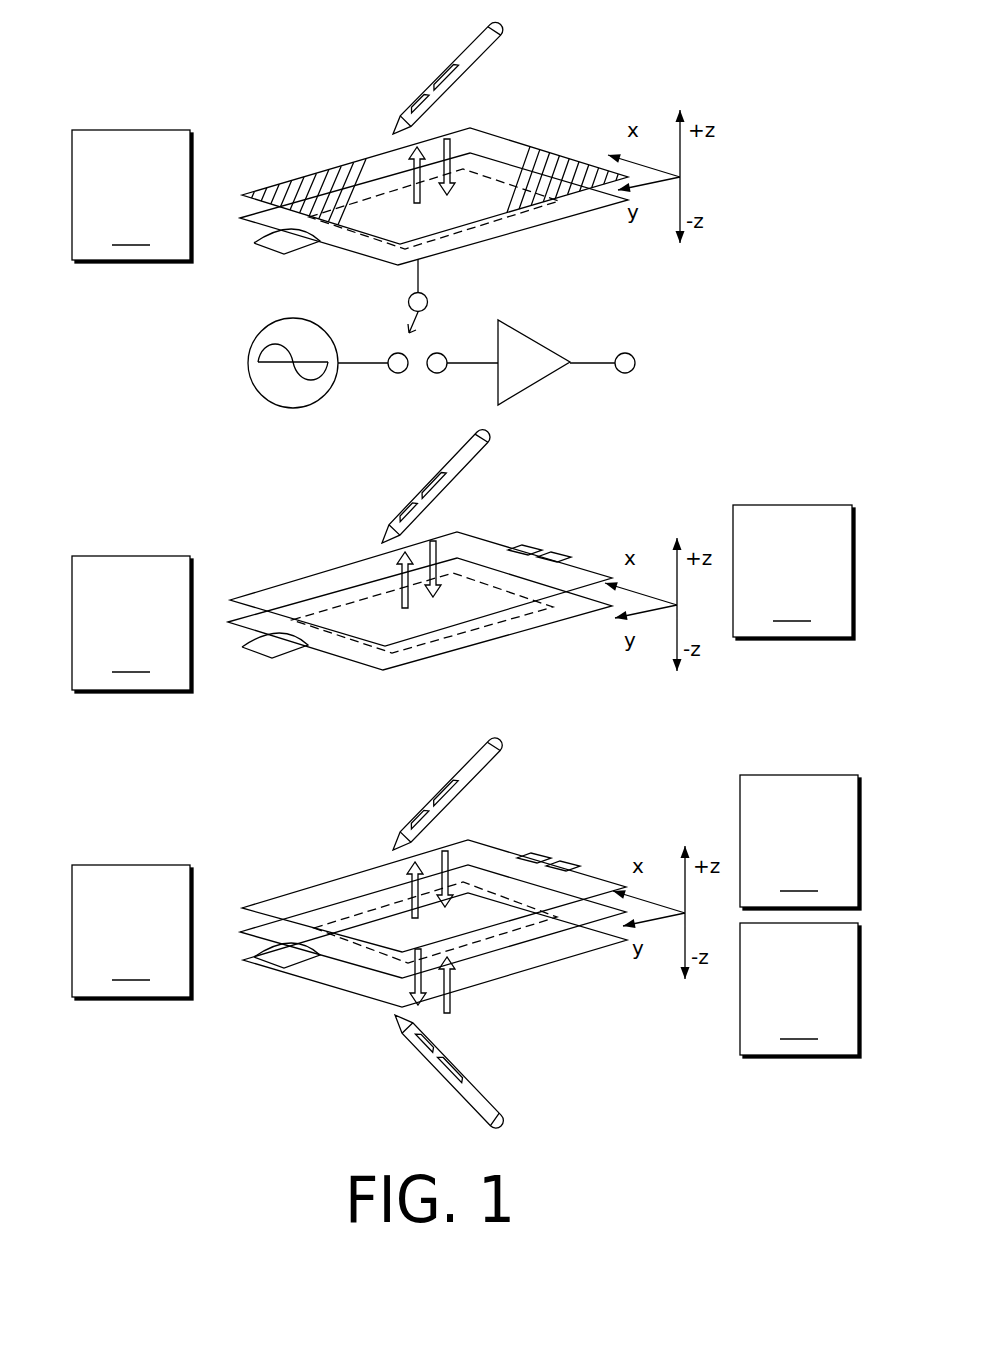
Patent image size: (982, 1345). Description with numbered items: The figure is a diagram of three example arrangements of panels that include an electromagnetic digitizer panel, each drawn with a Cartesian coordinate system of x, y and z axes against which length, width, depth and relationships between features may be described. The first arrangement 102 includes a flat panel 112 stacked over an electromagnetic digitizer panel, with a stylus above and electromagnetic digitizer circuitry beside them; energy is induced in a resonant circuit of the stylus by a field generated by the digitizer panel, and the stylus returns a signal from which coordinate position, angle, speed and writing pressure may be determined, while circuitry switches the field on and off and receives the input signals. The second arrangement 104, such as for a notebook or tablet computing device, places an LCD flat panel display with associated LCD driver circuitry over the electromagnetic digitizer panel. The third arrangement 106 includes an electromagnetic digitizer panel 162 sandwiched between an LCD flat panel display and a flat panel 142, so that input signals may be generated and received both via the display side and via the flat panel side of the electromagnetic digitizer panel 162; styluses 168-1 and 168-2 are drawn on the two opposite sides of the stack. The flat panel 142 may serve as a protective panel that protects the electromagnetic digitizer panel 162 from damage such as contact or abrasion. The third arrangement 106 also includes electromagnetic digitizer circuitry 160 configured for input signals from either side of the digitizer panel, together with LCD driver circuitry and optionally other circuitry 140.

The arrangement 102 is at (205, 85).
The arrangement 104 is at (198, 503).
The arrangement 106 is at (205, 819).
The flat panel 112 is at (330, 168).
The other circuitry 140 is at (800, 990).
The flat panel 142 is at (513, 973).
The electromagnetic digitizer circuitry 160 is at (132, 932).
The electromagnetic digitizer panel 162 is at (363, 970).
The first stylus 168-1 is at (402, 830).
The second stylus 168-2 is at (408, 1043).